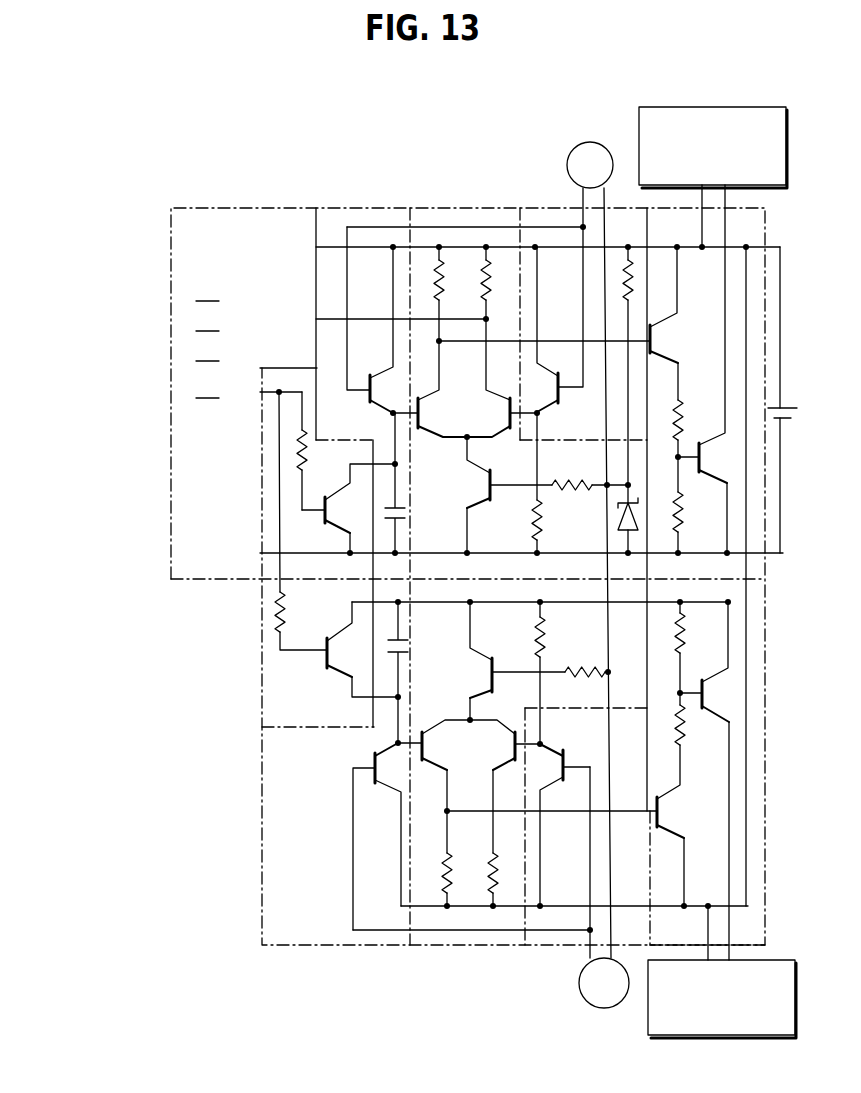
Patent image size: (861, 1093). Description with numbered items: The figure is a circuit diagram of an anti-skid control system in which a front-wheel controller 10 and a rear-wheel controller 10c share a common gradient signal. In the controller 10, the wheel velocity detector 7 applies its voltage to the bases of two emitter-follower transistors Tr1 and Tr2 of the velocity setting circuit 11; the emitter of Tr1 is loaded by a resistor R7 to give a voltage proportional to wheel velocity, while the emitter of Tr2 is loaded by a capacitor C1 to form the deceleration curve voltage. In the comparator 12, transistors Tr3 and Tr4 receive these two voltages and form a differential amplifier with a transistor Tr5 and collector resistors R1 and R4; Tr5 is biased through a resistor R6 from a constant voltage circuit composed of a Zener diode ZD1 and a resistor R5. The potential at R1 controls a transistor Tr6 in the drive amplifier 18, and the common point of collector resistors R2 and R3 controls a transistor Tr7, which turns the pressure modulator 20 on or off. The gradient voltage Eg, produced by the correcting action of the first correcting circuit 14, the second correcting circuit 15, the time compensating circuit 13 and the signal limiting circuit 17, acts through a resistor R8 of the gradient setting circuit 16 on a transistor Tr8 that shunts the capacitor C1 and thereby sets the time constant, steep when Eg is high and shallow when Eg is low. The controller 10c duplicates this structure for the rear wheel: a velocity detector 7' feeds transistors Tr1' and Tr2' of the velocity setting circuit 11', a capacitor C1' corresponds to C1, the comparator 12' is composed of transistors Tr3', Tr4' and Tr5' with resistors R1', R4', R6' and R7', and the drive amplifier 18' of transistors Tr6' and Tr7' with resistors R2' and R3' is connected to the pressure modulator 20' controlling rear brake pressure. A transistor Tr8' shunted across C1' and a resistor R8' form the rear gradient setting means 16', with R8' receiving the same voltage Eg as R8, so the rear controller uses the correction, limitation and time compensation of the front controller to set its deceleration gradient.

The wheel velocity detector 7 is at (590, 148).
The wheel velocity detector 7' is at (604, 1002).
The controller 10 is at (270, 207).
The controller 10c is at (263, 898).
The velocity setting circuit 11 is at (481, 555).
The second velocity setting circuit 11' is at (506, 849).
The comparator 12 is at (481, 302).
The comparator 12' is at (555, 849).
The time compensating circuit 13 is at (185, 223).
The first correcting circuit 14 is at (185, 345).
The second correcting circuit 15 is at (185, 443).
The gradient setting circuit 16 is at (290, 547).
The gradient setting means 16' is at (261, 545).
The signal limiting circuit 17 is at (185, 537).
The drive amplifier 18 is at (781, 382).
The drive amplifier 18' is at (730, 929).
The pressure modulator 20 is at (713, 157).
The pressure modulator 20' is at (722, 991).
The collector resistor R1 is at (453, 294).
The collector resistor R2 is at (696, 439).
The collector resistor R3 is at (699, 522).
The collector resistor R4 is at (499, 323).
The resistor R5 is at (635, 264).
The resistor R6 is at (591, 467).
The resistor R7 is at (517, 483).
The resistor R8 is at (318, 451).
The resistor R1' is at (460, 869).
The resistor R2' is at (699, 731).
The resistor R3' is at (700, 653).
The resistor R4' is at (506, 868).
The resistor R6' is at (588, 688).
The resistor R7' is at (561, 673).
The resistor R8' is at (301, 621).
The emitter-follower transistor Tr1 is at (562, 310).
The emitter-follower transistor Tr2 is at (377, 339).
The transistor Tr3 is at (502, 419).
The transistor Tr4 is at (442, 389).
The transistor Tr5 is at (494, 495).
The transistor Tr6 is at (675, 323).
The transistor Tr7 is at (710, 369).
The transistor Tr8 is at (348, 508).
The transistor Tr1' is at (559, 825).
The transistor Tr2' is at (363, 835).
The transistor Tr3' is at (509, 792).
The transistor Tr4' is at (456, 785).
The transistor Tr5' is at (504, 661).
The transistor Tr6' is at (684, 825).
The transistor Tr7' is at (713, 781).
The transistor Tr8' is at (362, 649).
The capacitor C1 is at (411, 483).
The capacitor C1' is at (417, 674).
The Zener diode ZD1 is at (618, 521).
The gradient voltage Eg is at (278, 395).